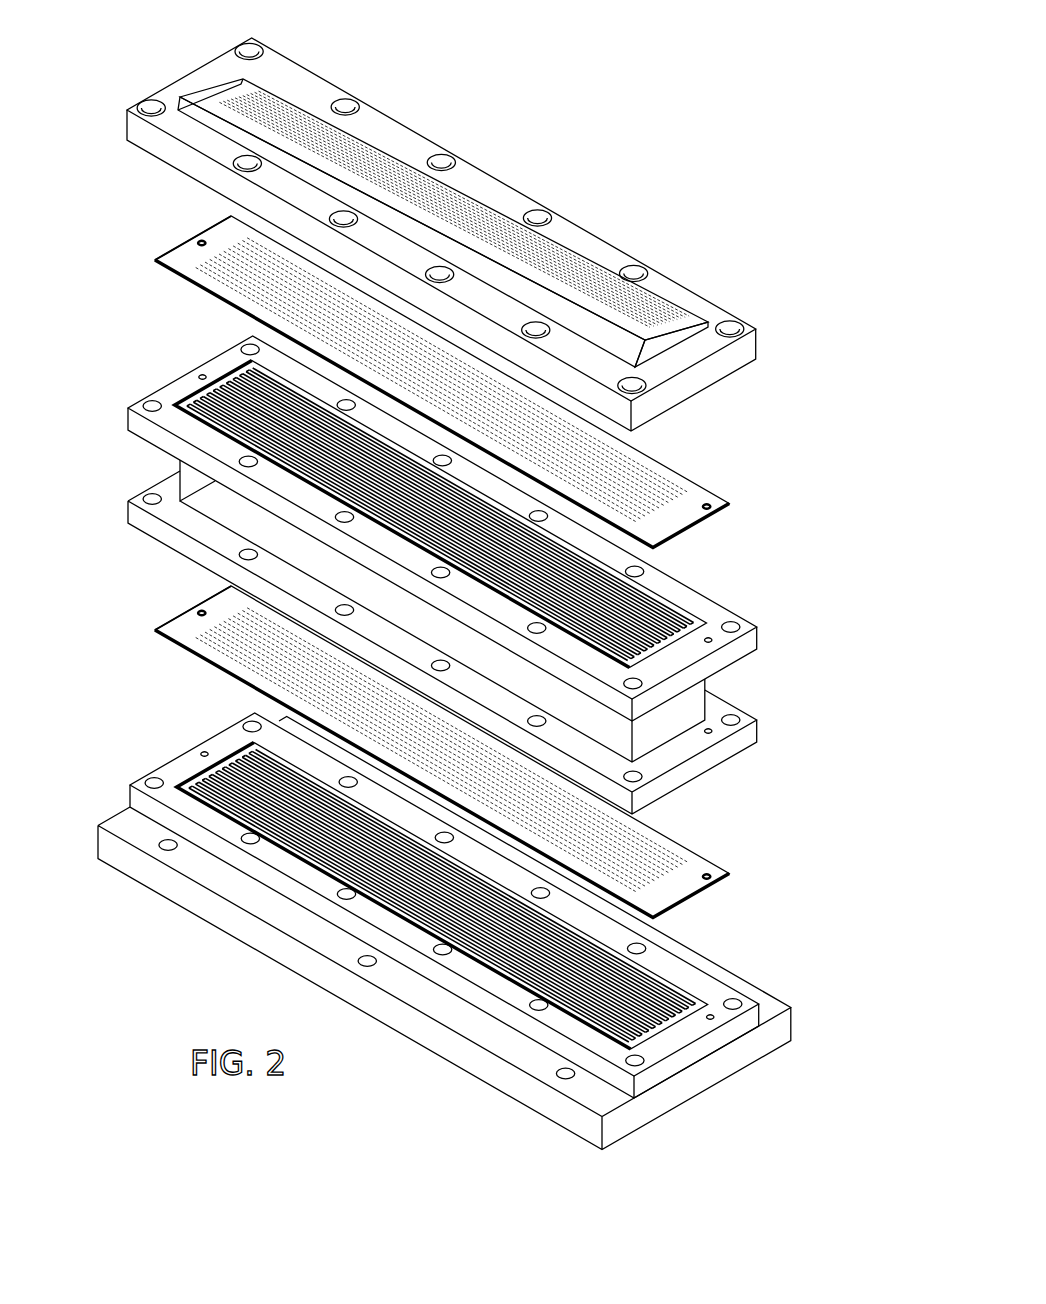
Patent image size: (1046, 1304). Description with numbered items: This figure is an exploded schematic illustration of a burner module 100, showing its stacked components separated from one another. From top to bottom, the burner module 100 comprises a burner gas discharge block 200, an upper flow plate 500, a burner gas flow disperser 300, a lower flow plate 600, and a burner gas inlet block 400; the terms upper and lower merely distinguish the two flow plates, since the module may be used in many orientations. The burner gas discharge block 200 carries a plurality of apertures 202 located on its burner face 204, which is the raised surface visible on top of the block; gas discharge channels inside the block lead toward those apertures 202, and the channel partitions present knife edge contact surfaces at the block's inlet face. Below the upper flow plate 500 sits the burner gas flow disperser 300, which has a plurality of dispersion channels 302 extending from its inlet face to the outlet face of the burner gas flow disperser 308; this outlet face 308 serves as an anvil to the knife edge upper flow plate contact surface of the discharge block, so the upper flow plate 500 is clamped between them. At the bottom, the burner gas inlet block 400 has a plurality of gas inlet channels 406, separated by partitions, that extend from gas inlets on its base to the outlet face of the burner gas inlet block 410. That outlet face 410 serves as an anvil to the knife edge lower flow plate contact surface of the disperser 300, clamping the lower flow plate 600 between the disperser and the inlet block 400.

The burner module 100 is at (537, 150).
The burner gas discharge block 200 is at (758, 342).
The apertures 202 is at (601, 265).
The burner face 204 is at (306, 108).
The burner gas flow disperser 300 is at (758, 633).
The dispersion channels 302 is at (228, 421).
The outlet face of the burner gas flow disperser 308 is at (190, 402).
The burner gas inlet block 400 is at (789, 1022).
The gas inlet channels 406 is at (228, 795).
The outlet face of the burner gas inlet block 410 is at (190, 780).
The upper flow plate 500 is at (703, 494).
The lower flow plate 600 is at (703, 864).